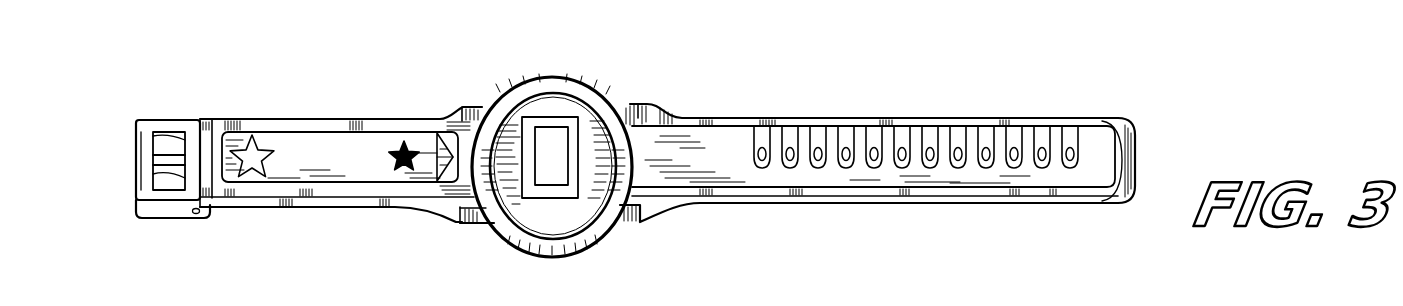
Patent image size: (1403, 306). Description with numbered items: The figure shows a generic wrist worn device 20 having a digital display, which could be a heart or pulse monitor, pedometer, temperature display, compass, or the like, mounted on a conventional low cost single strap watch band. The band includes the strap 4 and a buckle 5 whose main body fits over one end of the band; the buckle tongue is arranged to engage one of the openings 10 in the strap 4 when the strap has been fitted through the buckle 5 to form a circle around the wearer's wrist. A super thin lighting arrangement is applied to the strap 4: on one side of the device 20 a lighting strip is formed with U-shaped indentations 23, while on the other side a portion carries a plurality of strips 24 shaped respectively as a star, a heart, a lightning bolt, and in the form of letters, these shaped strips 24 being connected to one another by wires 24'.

The strap 4 is at (917, 119).
The buckle 5 is at (168, 110).
The openings 10 is at (763, 176).
The wrist worn device 20 is at (554, 80).
The U-shaped indentations 23 is at (790, 128).
The strips 24 is at (335, 114).
The wires 24' is at (340, 204).